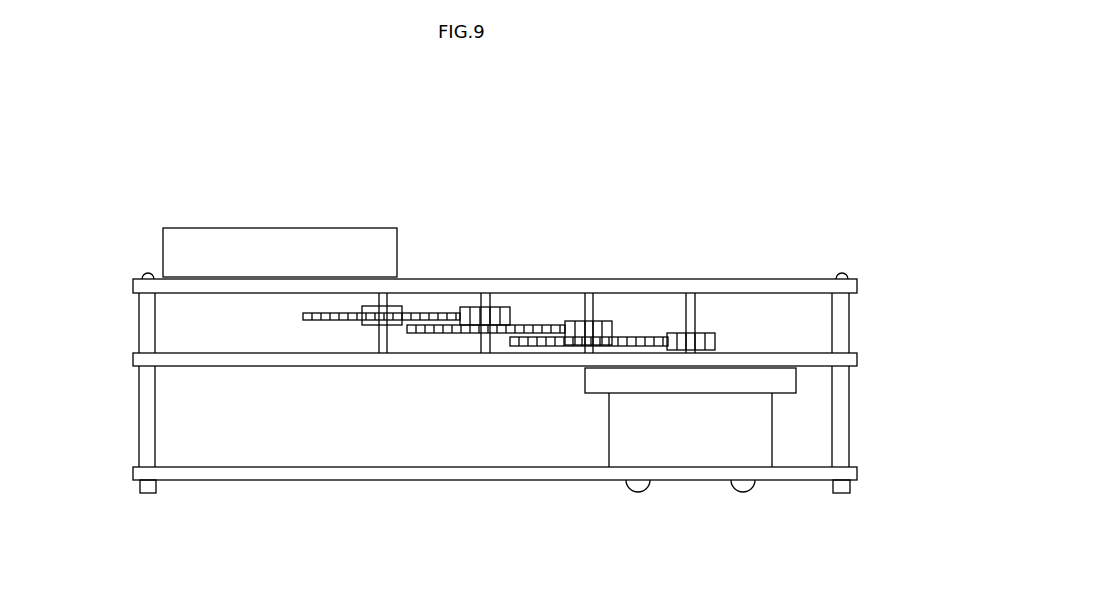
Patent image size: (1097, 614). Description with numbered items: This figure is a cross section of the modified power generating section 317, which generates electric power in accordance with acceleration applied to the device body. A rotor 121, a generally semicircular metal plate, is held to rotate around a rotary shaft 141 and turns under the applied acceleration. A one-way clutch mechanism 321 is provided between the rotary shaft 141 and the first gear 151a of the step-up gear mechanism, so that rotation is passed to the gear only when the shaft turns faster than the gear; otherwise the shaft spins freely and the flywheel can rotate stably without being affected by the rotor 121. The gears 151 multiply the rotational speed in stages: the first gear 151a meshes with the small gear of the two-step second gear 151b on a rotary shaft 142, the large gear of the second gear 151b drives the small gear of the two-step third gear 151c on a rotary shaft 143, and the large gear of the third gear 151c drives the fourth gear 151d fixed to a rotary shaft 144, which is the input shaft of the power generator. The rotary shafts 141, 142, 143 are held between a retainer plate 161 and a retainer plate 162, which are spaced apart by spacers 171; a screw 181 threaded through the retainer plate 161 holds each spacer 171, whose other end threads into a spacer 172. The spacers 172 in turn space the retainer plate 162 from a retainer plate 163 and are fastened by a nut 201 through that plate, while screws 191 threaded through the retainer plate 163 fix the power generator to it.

The power generating section 317 is at (200, 163).
The rotor 121 is at (282, 240).
The rotary shaft 141 is at (381, 358).
The rotary shaft 142 is at (485, 333).
The rotary shaft 143 is at (587, 353).
The rotary shaft 144 is at (692, 320).
The gears of the step-up gear mechanism 151 is at (695, 170).
The first gear 151a is at (447, 310).
The second gear 151b is at (510, 310).
The third gear 151c is at (598, 305).
The fourth gear 151d is at (670, 317).
The retainer plate 161 is at (133, 285).
The retainer plate 162 is at (133, 358).
The retainer plate 163 is at (133, 472).
The spacer 171 is at (139, 325).
The spacer 172 is at (139, 415).
The screw 181 is at (148, 274).
The screw 191 is at (646, 489).
The nut 201 is at (148, 493).
The one-way clutch mechanism 321 is at (365, 340).